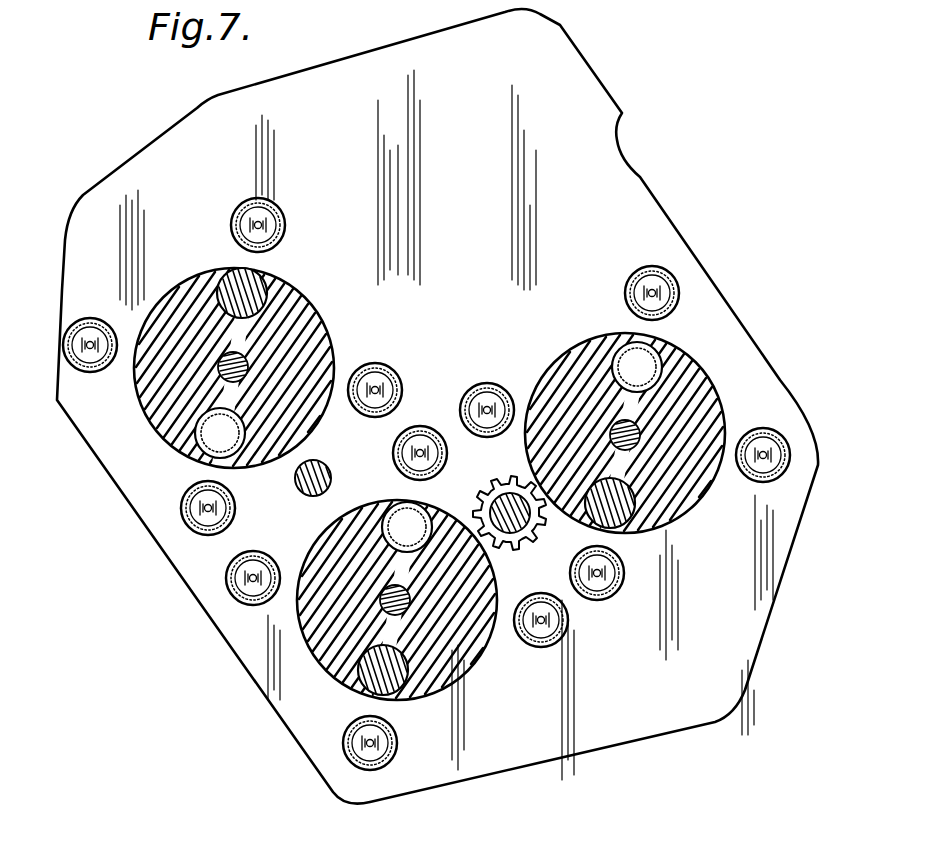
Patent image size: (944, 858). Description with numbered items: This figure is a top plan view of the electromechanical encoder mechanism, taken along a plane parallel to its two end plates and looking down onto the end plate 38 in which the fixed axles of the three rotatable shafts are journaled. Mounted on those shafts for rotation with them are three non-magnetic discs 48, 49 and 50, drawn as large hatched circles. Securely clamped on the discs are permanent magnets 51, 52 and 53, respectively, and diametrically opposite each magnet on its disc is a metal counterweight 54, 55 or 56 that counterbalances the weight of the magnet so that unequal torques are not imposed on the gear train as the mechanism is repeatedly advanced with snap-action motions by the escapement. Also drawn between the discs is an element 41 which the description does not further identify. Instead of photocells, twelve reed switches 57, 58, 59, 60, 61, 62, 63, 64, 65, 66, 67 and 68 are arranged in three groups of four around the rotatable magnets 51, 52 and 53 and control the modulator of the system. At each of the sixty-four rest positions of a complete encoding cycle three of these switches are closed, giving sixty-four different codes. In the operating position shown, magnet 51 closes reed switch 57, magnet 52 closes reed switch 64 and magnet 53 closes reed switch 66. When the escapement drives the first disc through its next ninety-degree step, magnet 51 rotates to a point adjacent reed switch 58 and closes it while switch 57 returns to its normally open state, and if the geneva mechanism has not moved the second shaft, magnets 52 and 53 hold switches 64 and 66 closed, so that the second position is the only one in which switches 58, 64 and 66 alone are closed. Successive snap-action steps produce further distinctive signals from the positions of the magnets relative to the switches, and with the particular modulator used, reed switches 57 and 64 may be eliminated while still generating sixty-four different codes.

The end plate 38 is at (645, 735).
The gear 41 is at (507, 555).
The non-magnetic disc 48 is at (698, 464).
The non-magnetic disc 49 is at (359, 614).
The non-magnetic disc 50 is at (206, 386).
The permanent magnet 51 is at (645, 342).
The permanent magnet 52 is at (392, 504).
The permanent magnet 53 is at (205, 455).
The metal counterweight 54 is at (615, 530).
The metal counterweight 55 is at (370, 695).
The metal counterweight 56 is at (262, 276).
The reed switch 57 is at (676, 281).
The reed switch 58 is at (790, 448).
The reed switch 59 is at (605, 600).
The reed switch 60 is at (487, 383).
The reed switch 61 is at (533, 647).
The reed switch 62 is at (352, 768).
The reed switch 63 is at (243, 605).
The reed switch 64 is at (422, 426).
The reed switch 65 is at (374, 363).
The reed switch 66 is at (195, 533).
The reed switch 67 is at (75, 372).
The reed switch 68 is at (280, 207).